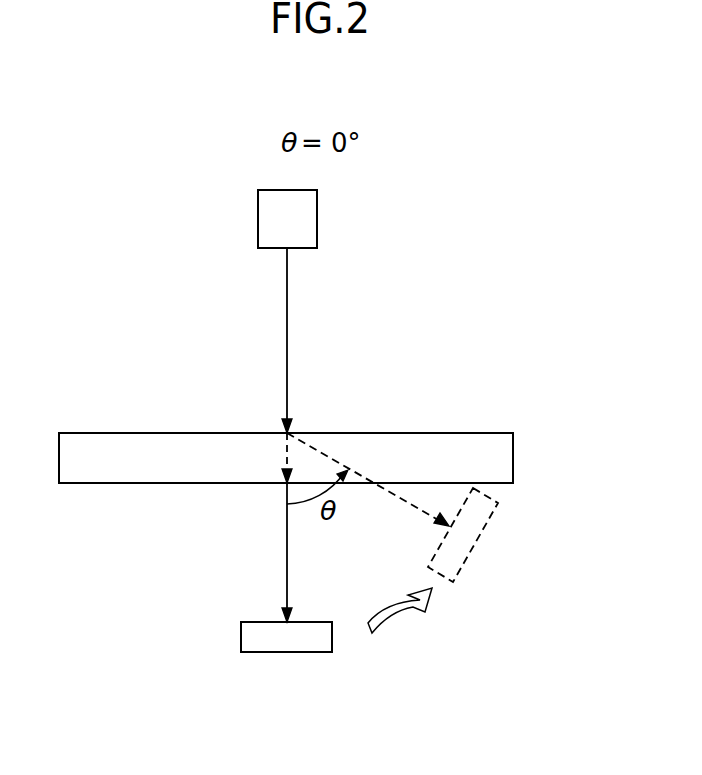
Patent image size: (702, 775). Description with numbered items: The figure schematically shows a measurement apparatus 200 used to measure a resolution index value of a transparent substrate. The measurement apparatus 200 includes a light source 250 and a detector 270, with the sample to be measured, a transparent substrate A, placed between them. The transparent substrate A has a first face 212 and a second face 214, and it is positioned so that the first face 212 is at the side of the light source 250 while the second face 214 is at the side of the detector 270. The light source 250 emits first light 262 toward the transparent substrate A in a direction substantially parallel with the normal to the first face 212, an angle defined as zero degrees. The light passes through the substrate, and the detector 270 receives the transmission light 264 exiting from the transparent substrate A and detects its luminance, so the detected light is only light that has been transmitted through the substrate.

The measurement apparatus 200 is at (498, 224).
The light source 250 is at (317, 219).
The first light 262 is at (287, 316).
The first face 212 is at (450, 433).
The transparent substrate A is at (513, 457).
The second face 214 is at (497, 484).
The transmission light 264 is at (287, 563).
The detector 270 is at (290, 652).